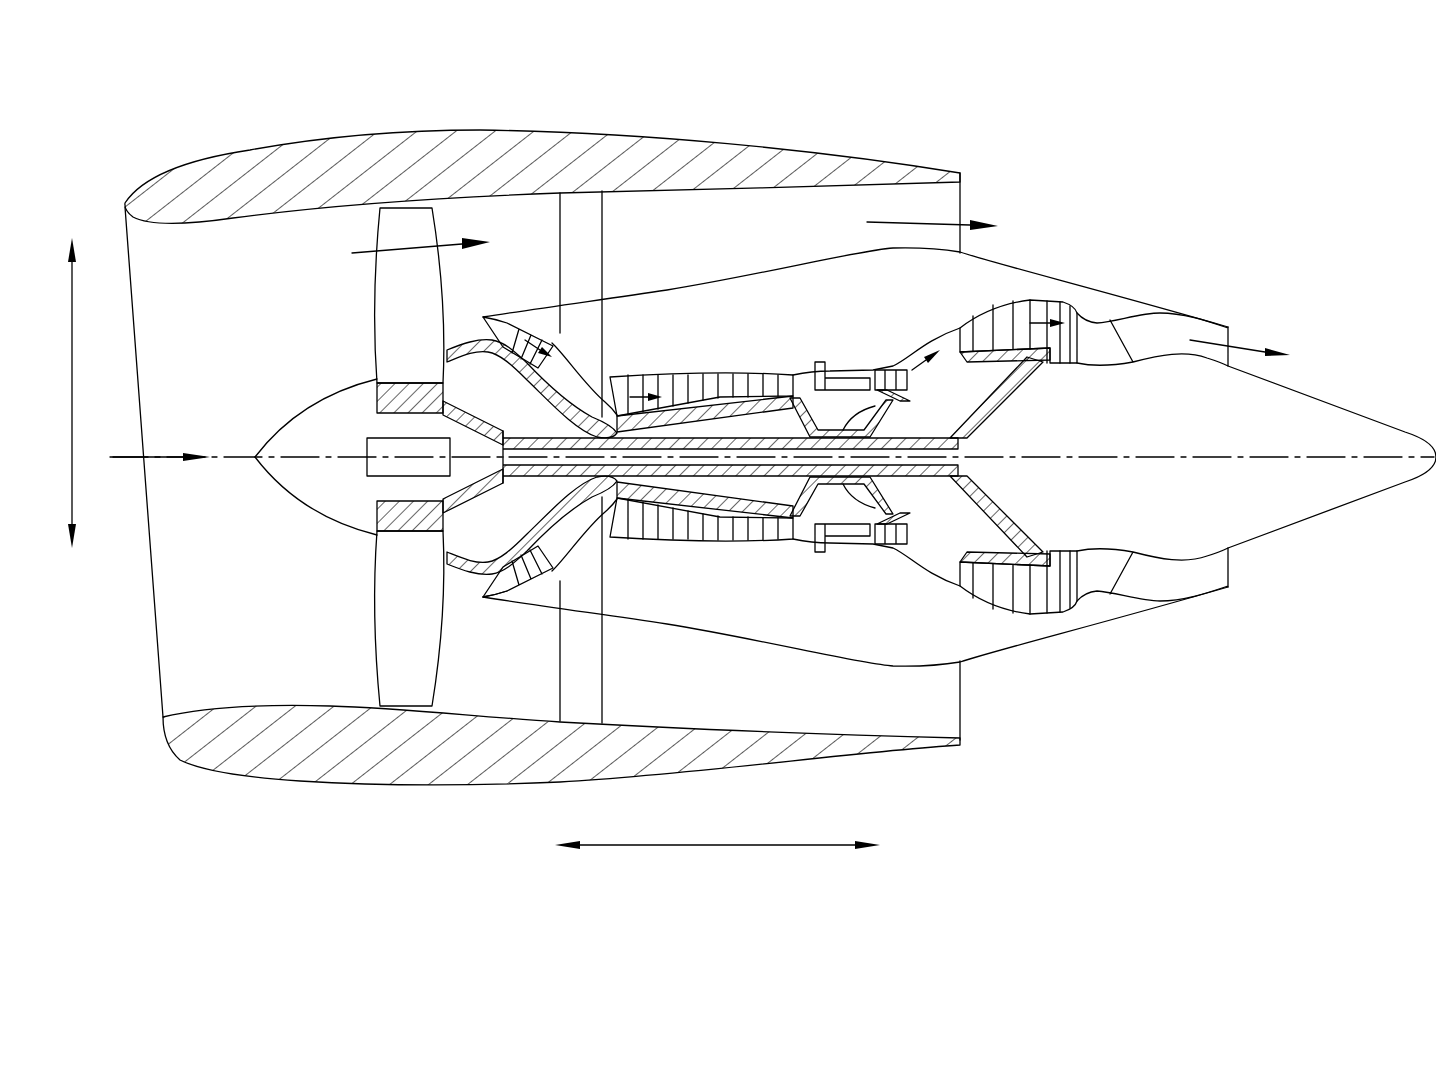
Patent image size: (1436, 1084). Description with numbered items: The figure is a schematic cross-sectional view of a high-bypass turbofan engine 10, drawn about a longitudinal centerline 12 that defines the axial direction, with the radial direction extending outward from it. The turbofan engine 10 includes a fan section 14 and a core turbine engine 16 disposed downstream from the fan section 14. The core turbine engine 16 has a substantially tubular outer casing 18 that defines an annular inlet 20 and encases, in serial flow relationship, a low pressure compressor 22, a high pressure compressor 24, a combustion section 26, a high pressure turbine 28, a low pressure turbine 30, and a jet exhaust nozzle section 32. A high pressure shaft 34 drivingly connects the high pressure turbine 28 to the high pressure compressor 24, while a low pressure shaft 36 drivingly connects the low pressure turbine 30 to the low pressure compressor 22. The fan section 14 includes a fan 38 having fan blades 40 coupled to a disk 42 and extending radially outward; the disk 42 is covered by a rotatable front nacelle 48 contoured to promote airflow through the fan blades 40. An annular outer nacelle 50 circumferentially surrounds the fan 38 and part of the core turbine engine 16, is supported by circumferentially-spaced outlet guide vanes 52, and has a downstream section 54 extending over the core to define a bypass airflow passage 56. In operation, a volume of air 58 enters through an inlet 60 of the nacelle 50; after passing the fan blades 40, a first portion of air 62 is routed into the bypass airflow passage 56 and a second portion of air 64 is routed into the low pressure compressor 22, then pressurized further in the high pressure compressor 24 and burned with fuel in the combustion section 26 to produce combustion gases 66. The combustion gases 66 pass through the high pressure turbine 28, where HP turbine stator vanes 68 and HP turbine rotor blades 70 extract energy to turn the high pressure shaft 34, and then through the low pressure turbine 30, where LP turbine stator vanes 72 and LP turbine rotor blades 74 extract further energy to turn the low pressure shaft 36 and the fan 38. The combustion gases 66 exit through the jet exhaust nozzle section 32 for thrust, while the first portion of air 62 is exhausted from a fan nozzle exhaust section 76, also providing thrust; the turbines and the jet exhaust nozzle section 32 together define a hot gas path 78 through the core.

The turbofan engine 10 is at (1214, 203).
The longitudinal centerline 12 is at (1143, 455).
The fan section 14 is at (455, 118).
The core turbine engine 16 is at (778, 325).
The outer casing 18 is at (800, 653).
The annular inlet 20 is at (478, 590).
The low pressure compressor 22 is at (560, 550).
The high pressure compressor 24 is at (637, 545).
The combustion section 26 is at (833, 540).
The high pressure turbine 28 is at (913, 540).
The low pressure turbine 30 is at (1062, 613).
The jet exhaust nozzle section 32 is at (1233, 333).
The high pressure shaft 34 is at (890, 400).
The low pressure shaft 36 is at (560, 445).
The fan 38 is at (350, 292).
The fan blades 40 is at (367, 650).
The disk 42 is at (372, 393).
The rotatable front nacelle 48 is at (293, 427).
The outer nacelle 50 is at (445, 785).
The outlet guide vanes 52 is at (603, 215).
The downstream section of the nacelle 54 is at (772, 135).
The bypass airflow passage 56 is at (719, 239).
The volume of air 58 is at (160, 453).
The inlet 60 is at (160, 697).
The first portion of air 62 is at (390, 247).
The second portion of air 64 is at (483, 331).
The combustion gases 66 is at (893, 367).
The HP turbine stator vanes 68 is at (880, 550).
The HP turbine rotor blades 70 is at (893, 550).
The LP turbine stator vanes 72 is at (970, 585).
The LP turbine rotor blades 74 is at (985, 612).
The fan nozzle exhaust section 76 is at (962, 200).
The hot gas path 78 is at (947, 337).